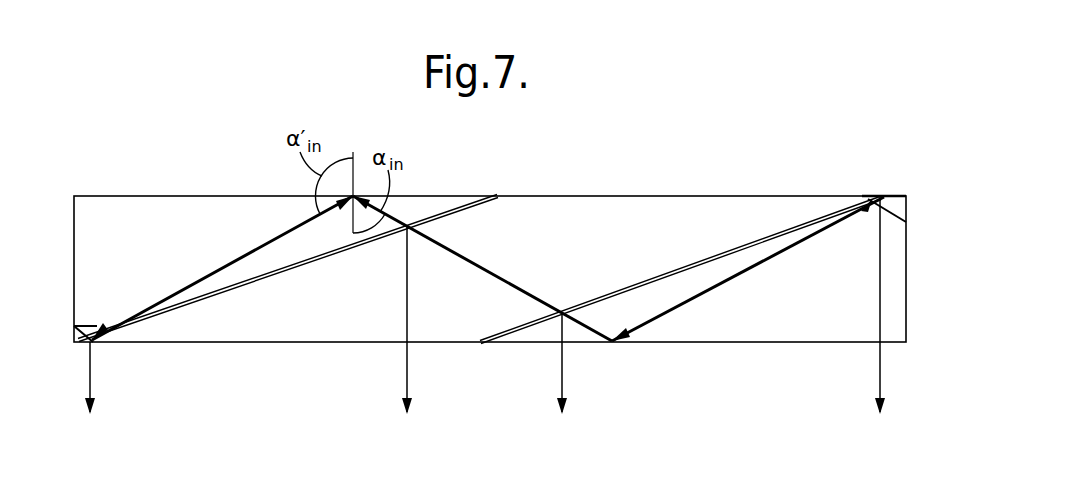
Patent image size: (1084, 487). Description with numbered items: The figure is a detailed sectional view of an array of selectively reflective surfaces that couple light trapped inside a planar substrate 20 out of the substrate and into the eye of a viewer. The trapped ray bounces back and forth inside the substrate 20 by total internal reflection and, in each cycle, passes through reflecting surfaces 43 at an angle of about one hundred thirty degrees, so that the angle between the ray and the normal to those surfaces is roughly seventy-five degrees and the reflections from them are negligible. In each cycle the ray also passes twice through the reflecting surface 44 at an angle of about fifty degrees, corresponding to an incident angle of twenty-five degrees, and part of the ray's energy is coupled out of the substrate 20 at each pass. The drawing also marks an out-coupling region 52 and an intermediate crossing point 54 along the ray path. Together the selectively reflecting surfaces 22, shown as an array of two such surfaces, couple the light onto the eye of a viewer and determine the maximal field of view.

The planar substrate 20 is at (344, 308).
The selectively reflecting surfaces 22 is at (452, 210).
The reflecting surfaces 43 is at (103, 330).
The reflecting surface 44 is at (118, 345).
The out-coupling element 52 is at (878, 198).
The intermediate diffraction point 54 is at (561, 311).